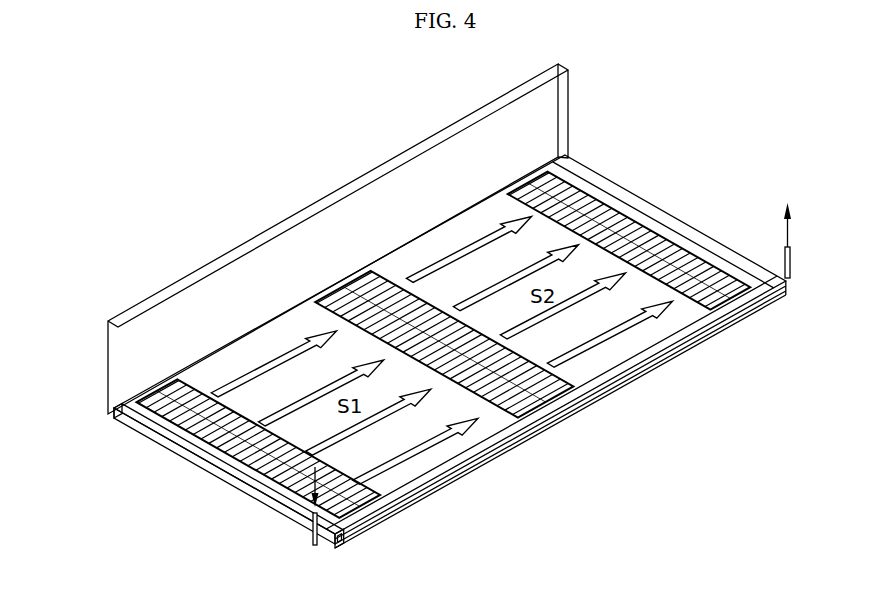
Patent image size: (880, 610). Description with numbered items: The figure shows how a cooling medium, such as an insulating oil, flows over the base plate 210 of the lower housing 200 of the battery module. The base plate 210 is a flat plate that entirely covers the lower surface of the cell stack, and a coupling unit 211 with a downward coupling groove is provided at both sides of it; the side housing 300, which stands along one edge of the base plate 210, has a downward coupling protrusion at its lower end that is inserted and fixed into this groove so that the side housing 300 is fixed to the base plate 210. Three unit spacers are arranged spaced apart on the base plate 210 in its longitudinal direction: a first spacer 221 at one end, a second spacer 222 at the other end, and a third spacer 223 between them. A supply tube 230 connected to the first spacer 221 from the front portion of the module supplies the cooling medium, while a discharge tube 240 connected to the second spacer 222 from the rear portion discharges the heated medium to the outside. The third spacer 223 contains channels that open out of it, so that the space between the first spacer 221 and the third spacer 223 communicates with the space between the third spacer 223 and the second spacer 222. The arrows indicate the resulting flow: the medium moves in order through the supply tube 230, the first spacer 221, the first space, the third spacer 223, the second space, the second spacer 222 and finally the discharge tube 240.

The lower housing 200 is at (477, 475).
The base plate 210 is at (200, 467).
The coupling unit 211 is at (110, 411).
The first spacer 221 is at (381, 496).
The second spacer 222 is at (701, 306).
The third spacer 223 is at (516, 419).
The supply tube 230 is at (307, 532).
The discharge tube 240 is at (792, 260).
The side housing 300 is at (296, 198).